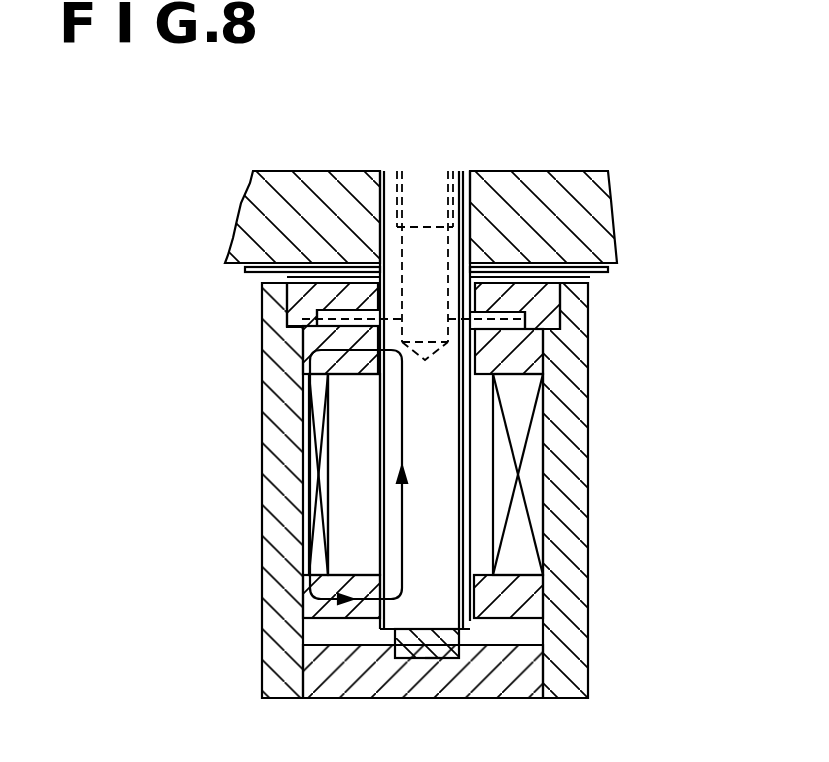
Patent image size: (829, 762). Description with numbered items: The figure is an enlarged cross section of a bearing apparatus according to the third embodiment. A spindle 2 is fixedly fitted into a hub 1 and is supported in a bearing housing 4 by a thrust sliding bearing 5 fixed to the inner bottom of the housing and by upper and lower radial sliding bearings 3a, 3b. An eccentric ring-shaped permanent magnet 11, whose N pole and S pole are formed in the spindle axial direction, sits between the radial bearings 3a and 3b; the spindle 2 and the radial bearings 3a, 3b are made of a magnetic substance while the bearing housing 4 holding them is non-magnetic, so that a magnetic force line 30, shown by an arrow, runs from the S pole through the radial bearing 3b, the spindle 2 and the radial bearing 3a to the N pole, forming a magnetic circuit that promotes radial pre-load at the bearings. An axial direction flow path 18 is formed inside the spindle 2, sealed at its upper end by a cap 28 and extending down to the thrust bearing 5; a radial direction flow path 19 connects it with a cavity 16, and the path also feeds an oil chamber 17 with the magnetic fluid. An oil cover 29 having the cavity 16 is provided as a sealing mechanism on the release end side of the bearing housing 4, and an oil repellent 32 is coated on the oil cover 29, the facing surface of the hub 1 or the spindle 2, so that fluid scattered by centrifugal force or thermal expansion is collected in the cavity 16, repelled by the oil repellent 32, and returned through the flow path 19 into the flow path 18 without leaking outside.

The hub 1 is at (563, 186).
The spindle 2 is at (448, 594).
The radial sliding bearing 3a is at (538, 368).
The radial sliding bearing 3b is at (522, 594).
The bearing housing 4 is at (578, 657).
The thrust sliding bearing 5 is at (442, 648).
The permanent magnet 11 is at (310, 483).
The cavity 16 is at (510, 323).
The oil chamber 17 is at (340, 527).
The axial direction flow path 18 is at (437, 263).
The radial direction flow path 19 is at (290, 317).
The cap 28 is at (427, 187).
The oil cover 29 is at (548, 305).
The magnetic force line 30 is at (413, 632).
The oil repellent 32 is at (287, 277).